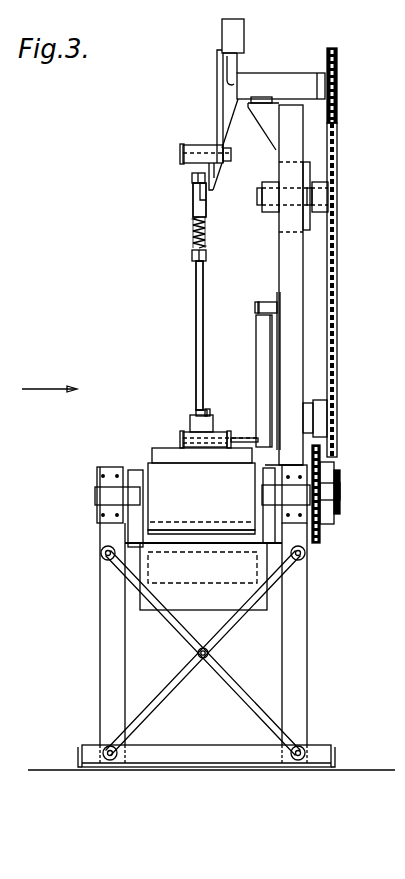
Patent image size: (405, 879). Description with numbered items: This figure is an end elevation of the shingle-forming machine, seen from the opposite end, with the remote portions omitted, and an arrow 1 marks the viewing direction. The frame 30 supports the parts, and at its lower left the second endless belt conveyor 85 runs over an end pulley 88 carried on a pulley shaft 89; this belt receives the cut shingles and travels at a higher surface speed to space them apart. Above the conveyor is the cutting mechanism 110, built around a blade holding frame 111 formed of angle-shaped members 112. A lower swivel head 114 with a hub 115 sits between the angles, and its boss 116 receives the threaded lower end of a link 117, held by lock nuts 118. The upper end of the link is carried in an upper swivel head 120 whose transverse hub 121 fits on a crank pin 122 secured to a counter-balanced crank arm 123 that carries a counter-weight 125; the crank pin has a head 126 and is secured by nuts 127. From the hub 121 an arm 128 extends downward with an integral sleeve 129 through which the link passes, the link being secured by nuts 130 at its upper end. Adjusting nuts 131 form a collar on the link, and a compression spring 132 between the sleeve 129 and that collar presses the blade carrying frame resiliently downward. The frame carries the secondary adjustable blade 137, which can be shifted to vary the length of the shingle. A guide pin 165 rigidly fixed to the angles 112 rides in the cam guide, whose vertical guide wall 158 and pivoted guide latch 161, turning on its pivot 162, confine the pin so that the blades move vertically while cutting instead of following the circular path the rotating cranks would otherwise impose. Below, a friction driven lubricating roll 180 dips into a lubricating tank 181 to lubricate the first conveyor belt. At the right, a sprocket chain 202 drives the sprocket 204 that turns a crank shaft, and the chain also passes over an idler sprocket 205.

The direction of feed 1 is at (45, 385).
The frame 30 is at (296, 630).
The second endless belt conveyor 85 is at (162, 476).
The end pulley 88 is at (150, 513).
The pulley shaft 89 is at (135, 497).
The cutting mechanism 110 is at (188, 307).
The blade holding frame 111 is at (153, 444).
The angle-shaped members 112 is at (180, 443).
The lower swivel head 114 is at (190, 432).
The hub 115 is at (210, 436).
The boss 116 is at (213, 413).
The link 117 is at (200, 357).
The lock nuts 118 is at (197, 411).
The upper swivel head 120 is at (181, 172).
The transverse hub 121 is at (197, 145).
The crank pin 122 is at (213, 165).
The counter-balanced crank arm 123 is at (220, 118).
The counter-weight 125 is at (233, 38).
The head 126 is at (180, 152).
The nuts 127 is at (226, 156).
The arm 128 is at (215, 187).
The sleeve 129 is at (195, 205).
The nuts 130 is at (192, 181).
The adjusting nuts 131 is at (192, 258).
The compression spring 132 is at (192, 227).
The secondary adjustable blade 137 is at (193, 455).
The vertical guide wall 158 is at (265, 352).
The guide latch 161 is at (268, 302).
The pivot 162 is at (256, 308).
The guide pin 165 is at (240, 437).
The friction driven lubricating roll 180 is at (208, 572).
The lubricating tank 181 is at (223, 597).
The sprocket chain 202 is at (338, 307).
The sprocket 204 is at (336, 62).
The idler sprocket 205 is at (338, 202).